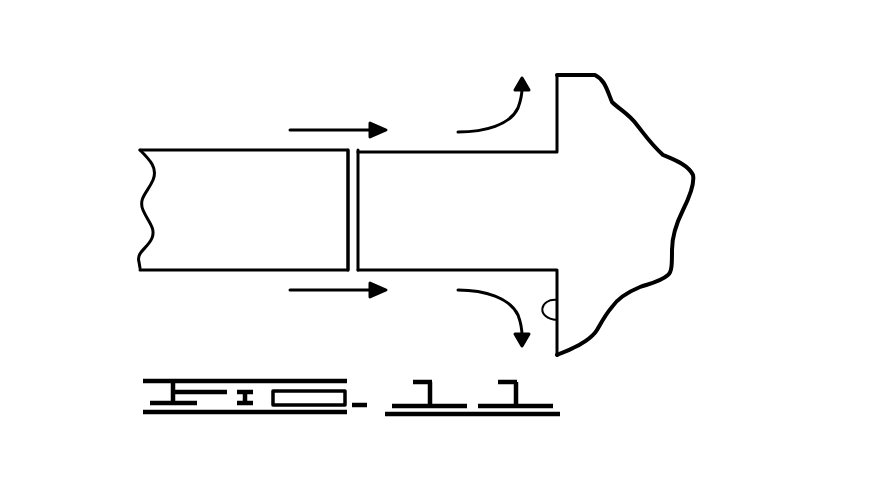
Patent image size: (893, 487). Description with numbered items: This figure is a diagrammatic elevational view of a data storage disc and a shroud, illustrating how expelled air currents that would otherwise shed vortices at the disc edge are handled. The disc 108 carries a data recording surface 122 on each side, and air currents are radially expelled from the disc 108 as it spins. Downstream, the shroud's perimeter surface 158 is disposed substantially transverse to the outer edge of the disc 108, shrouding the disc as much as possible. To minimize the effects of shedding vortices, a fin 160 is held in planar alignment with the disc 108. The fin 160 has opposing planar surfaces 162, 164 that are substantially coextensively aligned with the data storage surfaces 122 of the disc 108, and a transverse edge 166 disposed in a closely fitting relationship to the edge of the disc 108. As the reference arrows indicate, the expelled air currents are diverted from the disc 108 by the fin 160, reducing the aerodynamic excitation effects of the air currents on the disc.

The disc 108 is at (162, 218).
The data recording surface 122 is at (223, 150).
The transverse edge 166 is at (347, 212).
The planar surface 164 is at (423, 150).
The planar surface 162 is at (425, 270).
The fin 160 is at (502, 210).
The perimeter surface 158 is at (557, 320).